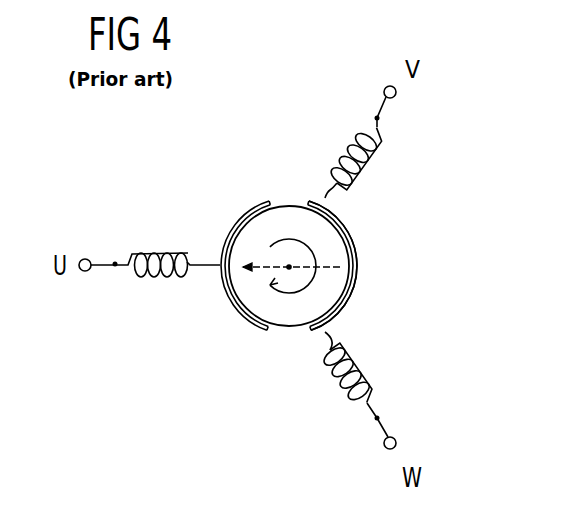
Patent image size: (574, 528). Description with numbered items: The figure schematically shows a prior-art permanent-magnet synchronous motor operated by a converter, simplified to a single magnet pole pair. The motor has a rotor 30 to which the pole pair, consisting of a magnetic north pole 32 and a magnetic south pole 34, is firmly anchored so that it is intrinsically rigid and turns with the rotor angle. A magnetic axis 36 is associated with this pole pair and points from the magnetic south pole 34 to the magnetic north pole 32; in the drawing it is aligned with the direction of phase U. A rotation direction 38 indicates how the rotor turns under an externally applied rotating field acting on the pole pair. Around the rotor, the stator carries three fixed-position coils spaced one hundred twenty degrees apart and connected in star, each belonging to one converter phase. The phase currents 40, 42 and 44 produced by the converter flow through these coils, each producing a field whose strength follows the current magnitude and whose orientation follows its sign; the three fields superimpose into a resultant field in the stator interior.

The rotor 30 is at (292, 204).
The magnetic north pole 32 is at (263, 203).
The magnetic south pole 34 is at (357, 268).
The magnetic axis 36 is at (322, 260).
The rotation direction 38 is at (318, 252).
The phase current 40 is at (113, 268).
The phase current 42 is at (385, 121).
The phase current 44 is at (387, 415).